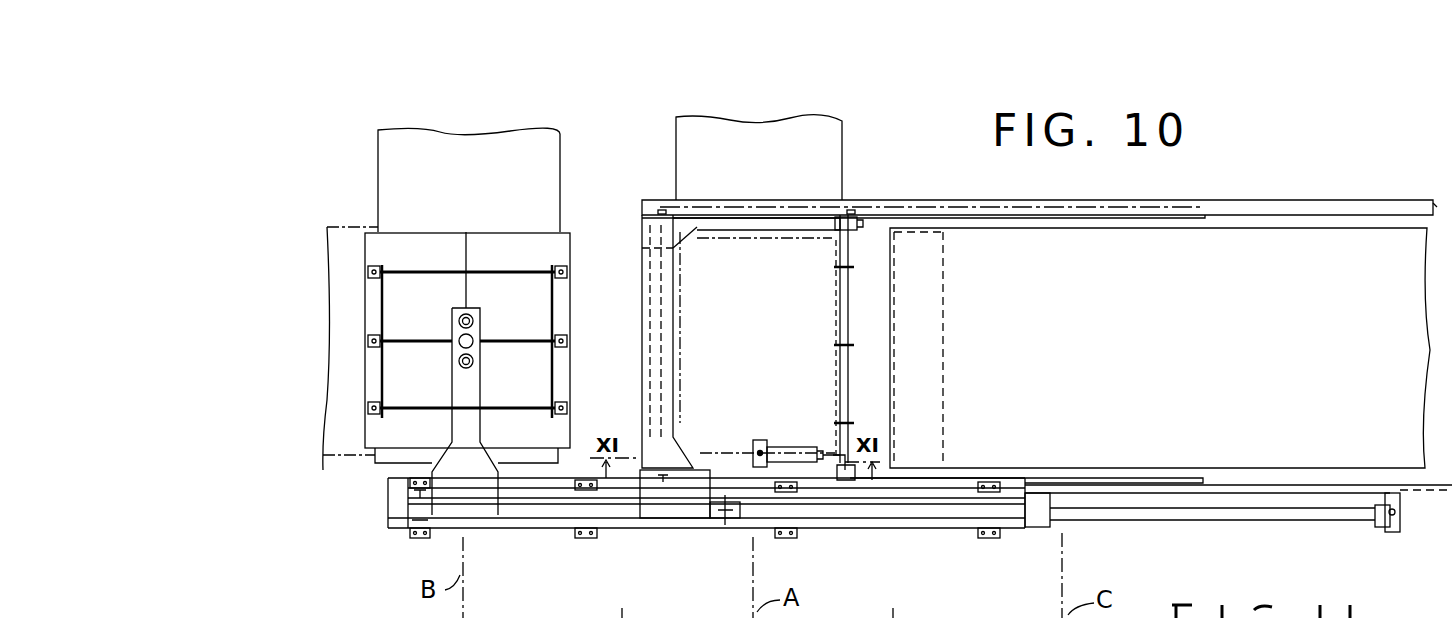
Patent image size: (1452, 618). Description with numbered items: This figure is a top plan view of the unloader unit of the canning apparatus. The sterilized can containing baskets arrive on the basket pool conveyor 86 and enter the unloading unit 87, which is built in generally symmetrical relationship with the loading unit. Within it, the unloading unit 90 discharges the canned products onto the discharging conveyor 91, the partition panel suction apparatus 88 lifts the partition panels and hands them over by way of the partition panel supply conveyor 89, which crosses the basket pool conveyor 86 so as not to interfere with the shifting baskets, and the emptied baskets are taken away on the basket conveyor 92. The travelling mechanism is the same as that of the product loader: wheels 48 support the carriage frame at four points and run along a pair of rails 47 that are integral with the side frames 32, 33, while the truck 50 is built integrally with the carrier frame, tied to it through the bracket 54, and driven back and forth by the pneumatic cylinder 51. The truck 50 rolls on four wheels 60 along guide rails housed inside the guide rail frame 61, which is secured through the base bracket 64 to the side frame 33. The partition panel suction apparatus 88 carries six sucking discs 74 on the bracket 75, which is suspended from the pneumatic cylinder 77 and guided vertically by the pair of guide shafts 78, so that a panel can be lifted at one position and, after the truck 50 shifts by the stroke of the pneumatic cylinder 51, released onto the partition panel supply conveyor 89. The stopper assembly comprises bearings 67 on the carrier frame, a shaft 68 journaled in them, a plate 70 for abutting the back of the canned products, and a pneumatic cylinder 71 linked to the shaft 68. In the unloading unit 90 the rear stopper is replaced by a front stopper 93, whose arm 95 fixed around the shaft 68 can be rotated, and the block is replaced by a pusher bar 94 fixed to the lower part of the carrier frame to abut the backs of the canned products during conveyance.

The side frame 32 is at (1262, 210).
The side frame 33 is at (1318, 493).
The rails 47 is at (1140, 215).
The wheels 48 is at (662, 210).
The truck 50 is at (527, 508).
The pneumatic cylinder 51 is at (1208, 520).
The bracket 54 is at (686, 508).
The wheels 60 is at (405, 484).
The guide rail frame 61 is at (922, 525).
The base bracket 64 is at (992, 540).
The bearings 67 is at (846, 213).
The shaft 68 is at (850, 320).
The plate 70 is at (850, 370).
The pneumatic cylinder 71 is at (786, 447).
The sucking discs 74 is at (370, 272).
The bracket 75 is at (438, 272).
The pneumatic cylinder 77 is at (473, 328).
The guide shafts 78 is at (473, 362).
The basket pool conveyor 86 is at (332, 468).
The unloading unit 87 is at (811, 543).
The partition panel suction apparatus 88 is at (380, 370).
The partition panel supply conveyor 89 is at (378, 198).
The unloading unit 90 is at (644, 183).
The discharging conveyor 91 is at (1012, 232).
The basket conveyor 92 is at (850, 150).
The front stopper 93 is at (876, 228).
The pusher bar 94 is at (640, 318).
The arm 95 is at (855, 345).